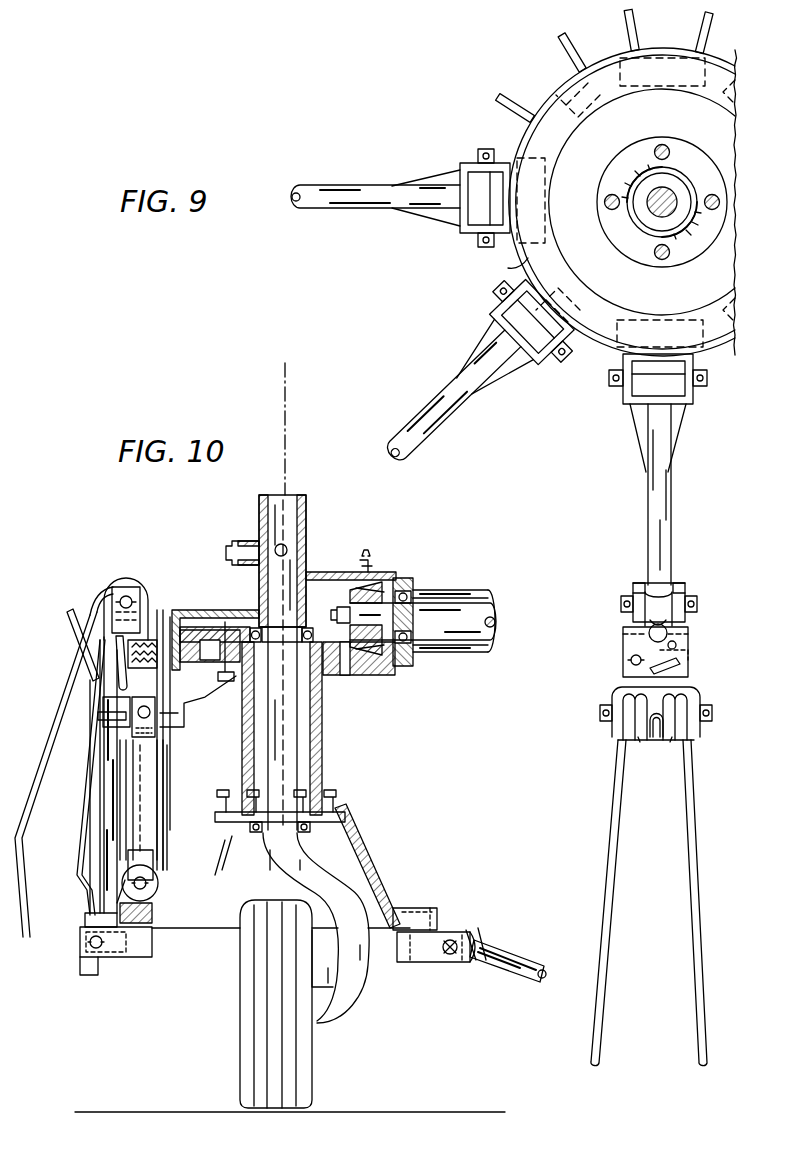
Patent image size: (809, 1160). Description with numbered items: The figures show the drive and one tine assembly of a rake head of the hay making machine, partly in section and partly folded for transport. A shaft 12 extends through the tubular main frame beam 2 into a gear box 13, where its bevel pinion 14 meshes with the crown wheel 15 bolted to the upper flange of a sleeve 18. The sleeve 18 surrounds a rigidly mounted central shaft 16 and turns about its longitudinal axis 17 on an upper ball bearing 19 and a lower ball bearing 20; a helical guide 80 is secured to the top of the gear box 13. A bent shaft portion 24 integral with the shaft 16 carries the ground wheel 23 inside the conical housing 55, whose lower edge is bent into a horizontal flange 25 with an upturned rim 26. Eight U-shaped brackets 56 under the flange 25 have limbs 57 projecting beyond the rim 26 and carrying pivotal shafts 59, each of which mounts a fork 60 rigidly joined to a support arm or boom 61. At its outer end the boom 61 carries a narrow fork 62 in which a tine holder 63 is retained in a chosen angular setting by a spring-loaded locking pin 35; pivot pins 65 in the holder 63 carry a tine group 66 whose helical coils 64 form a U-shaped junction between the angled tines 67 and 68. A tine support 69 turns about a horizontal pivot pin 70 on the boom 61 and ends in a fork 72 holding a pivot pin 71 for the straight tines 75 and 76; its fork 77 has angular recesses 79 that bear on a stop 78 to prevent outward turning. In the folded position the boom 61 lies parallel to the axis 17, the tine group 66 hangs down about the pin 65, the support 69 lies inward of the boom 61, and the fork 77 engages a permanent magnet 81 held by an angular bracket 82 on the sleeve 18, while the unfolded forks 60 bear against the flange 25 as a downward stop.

In FIG. 10, the main frame beam 2 is at (464, 598).
In FIG. 10, the shaft 12 is at (484, 614).
In FIG. 10, the gear box 13 is at (330, 574).
In FIG. 10, the bevel pinion 14 is at (364, 592).
In FIG. 10, the bevel pinion or crown wheel 15 is at (384, 674).
In FIG. 9, the central shaft 16 is at (648, 196).
In FIG. 10, the central shaft 16 is at (288, 540).
In FIG. 10, the longitudinal axis 17 is at (288, 462).
In FIG. 9, the sleeve 18 is at (674, 240).
In FIG. 10, the upper ball bearing 19 is at (308, 630).
In FIG. 10, the lower ball bearing 20 is at (240, 826).
In FIG. 10, the ground wheel 23 is at (312, 1080).
In FIG. 10, the bent shaft portion 24 is at (356, 1004).
In FIG. 10, the flange 25 is at (420, 910).
In FIG. 9, the rim 26 is at (682, 56).
In FIG. 10, the rim 26 is at (436, 914).
In FIG. 9, the spring-loaded locking pin 35 is at (625, 664).
In FIG. 10, the spring-loaded locking pin 35 is at (172, 628).
In FIG. 9, the housing 55 is at (592, 134).
In FIG. 10, the housing 55 is at (364, 848).
In FIG. 9, the U-shaped bracket 56 is at (512, 110).
In FIG. 10, the U-shaped bracket 56 is at (158, 961).
In FIG. 9, the limb 57 is at (492, 298).
In FIG. 10, the limb 57 is at (408, 962).
In FIG. 9, the pivotal shaft 59 is at (604, 356).
In FIG. 10, the pivotal shaft 59 is at (466, 938).
In FIG. 9, the fork 60 is at (620, 402).
In FIG. 10, the fork 60 is at (478, 965).
In FIG. 9, the support arm or boom 61 is at (338, 188).
In FIG. 10, the support arm or boom 61 is at (530, 958).
In FIG. 9, the narrow fork 62 is at (690, 636).
In FIG. 10, the narrow fork 62 is at (106, 638).
In FIG. 9, the tine holder 63 is at (690, 700).
In FIG. 10, the tine holder 63 is at (140, 585).
In FIG. 9, the helical coils 64 is at (662, 741).
In FIG. 10, the helical coils 64 is at (150, 600).
In FIG. 9, the pivot pin 65 is at (600, 714).
In FIG. 10, the pivot pin 65 is at (126, 600).
In FIG. 9, the tine group 66 is at (662, 845).
In FIG. 9, the tine 67 is at (695, 930).
In FIG. 10, the tine 67 is at (34, 786).
In FIG. 9, the tine 68 is at (608, 866).
In FIG. 10, the tine 68 is at (82, 848).
In FIG. 9, the tine support 69 is at (642, 604).
In FIG. 10, the tine support 69 is at (176, 780).
In FIG. 9, the pivot pin 70 is at (620, 604).
In FIG. 10, the pivot pin 70 is at (152, 722).
In FIG. 10, the pivot pin 71 is at (160, 884).
In FIG. 10, the fork 72 is at (160, 906).
In FIG. 10, the tine 75 is at (160, 800).
In FIG. 10, the tine 76 is at (160, 822).
In FIG. 9, the fork 77 is at (676, 598).
In FIG. 10, the fork 77 is at (150, 770).
In FIG. 10, the stop 78 is at (98, 716).
In FIG. 10, the angular recess 79 is at (150, 674).
In FIG. 10, the helical guide 80 is at (234, 552).
In FIG. 10, the permanent magnet 81 is at (178, 716).
In FIG. 10, the angular bracket 82 is at (194, 680).